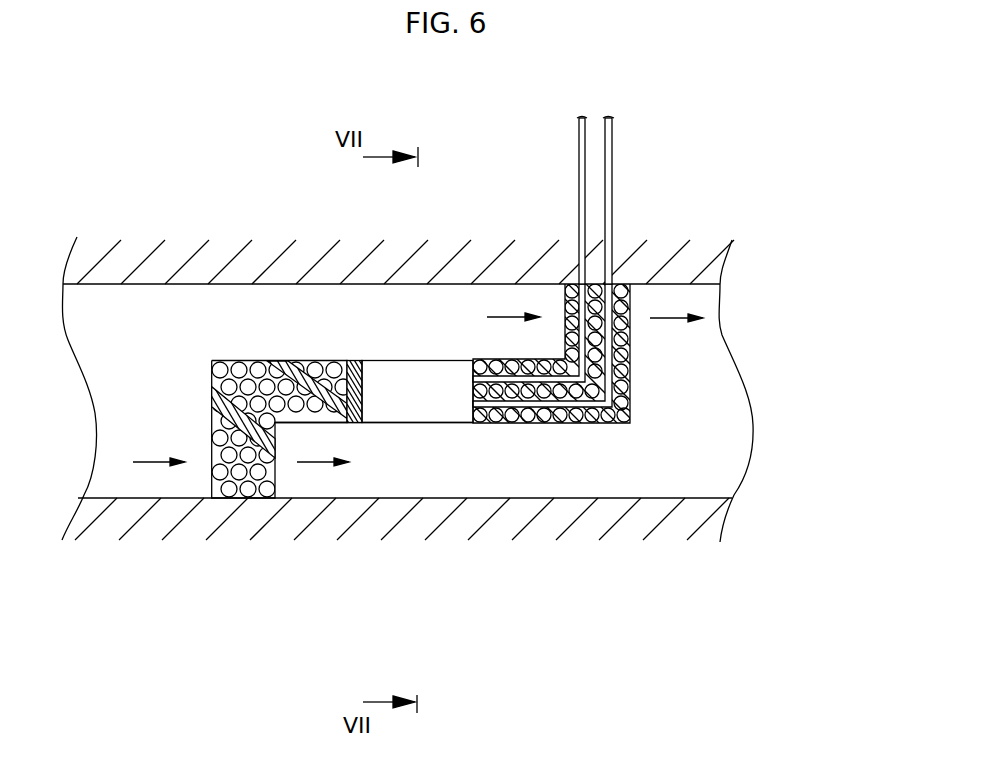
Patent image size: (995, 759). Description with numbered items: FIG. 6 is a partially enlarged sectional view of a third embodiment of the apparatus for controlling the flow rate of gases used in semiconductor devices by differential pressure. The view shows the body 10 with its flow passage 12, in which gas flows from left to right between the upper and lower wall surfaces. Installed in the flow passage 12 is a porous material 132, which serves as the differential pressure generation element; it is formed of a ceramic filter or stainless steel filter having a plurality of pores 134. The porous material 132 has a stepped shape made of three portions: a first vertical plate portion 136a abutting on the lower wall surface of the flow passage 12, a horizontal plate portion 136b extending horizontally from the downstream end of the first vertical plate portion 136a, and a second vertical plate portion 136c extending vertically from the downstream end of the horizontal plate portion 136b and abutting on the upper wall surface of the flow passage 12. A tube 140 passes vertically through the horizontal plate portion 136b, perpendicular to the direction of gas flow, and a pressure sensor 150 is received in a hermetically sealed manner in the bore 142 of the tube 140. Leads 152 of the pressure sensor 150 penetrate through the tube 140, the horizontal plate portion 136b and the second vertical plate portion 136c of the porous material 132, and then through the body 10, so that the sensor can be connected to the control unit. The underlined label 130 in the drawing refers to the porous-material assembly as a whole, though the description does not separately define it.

The body 10 is at (115, 522).
The flow passage 12 is at (117, 313).
The sealing assembly 130 is at (525, 428).
The porous material 132 is at (571, 440).
The pores 134 is at (262, 478).
The first vertical plate portion 136a is at (220, 470).
The horizontal plate portion 136b is at (248, 380).
The second vertical plate portion 136c is at (630, 397).
The tube 140 is at (318, 423).
The bore 142 is at (362, 395).
The pressure sensor 150 is at (453, 383).
The leads 152 is at (610, 167).